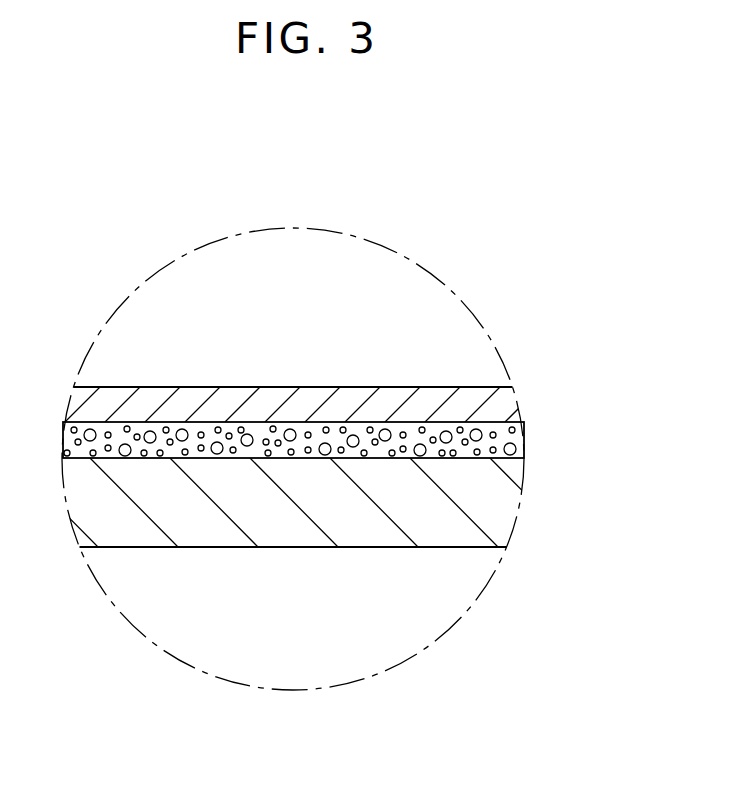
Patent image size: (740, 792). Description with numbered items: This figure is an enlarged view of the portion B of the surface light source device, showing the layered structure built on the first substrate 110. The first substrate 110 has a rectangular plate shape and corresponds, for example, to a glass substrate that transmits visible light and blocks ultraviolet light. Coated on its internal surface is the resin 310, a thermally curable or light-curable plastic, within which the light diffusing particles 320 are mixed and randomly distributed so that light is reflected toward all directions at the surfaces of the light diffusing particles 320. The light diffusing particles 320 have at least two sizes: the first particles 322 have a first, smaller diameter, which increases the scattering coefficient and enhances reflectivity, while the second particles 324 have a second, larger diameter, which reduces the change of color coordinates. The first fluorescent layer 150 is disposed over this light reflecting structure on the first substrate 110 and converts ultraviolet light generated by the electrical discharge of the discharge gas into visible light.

The portion B is at (291, 229).
The first fluorescent layer 150 is at (512, 400).
The light diffusing particles 320 is at (359, 454).
The first particles 322 is at (512, 430).
The second particles 324 is at (516, 450).
The resin 310 is at (500, 460).
The first substrate 110 is at (505, 533).